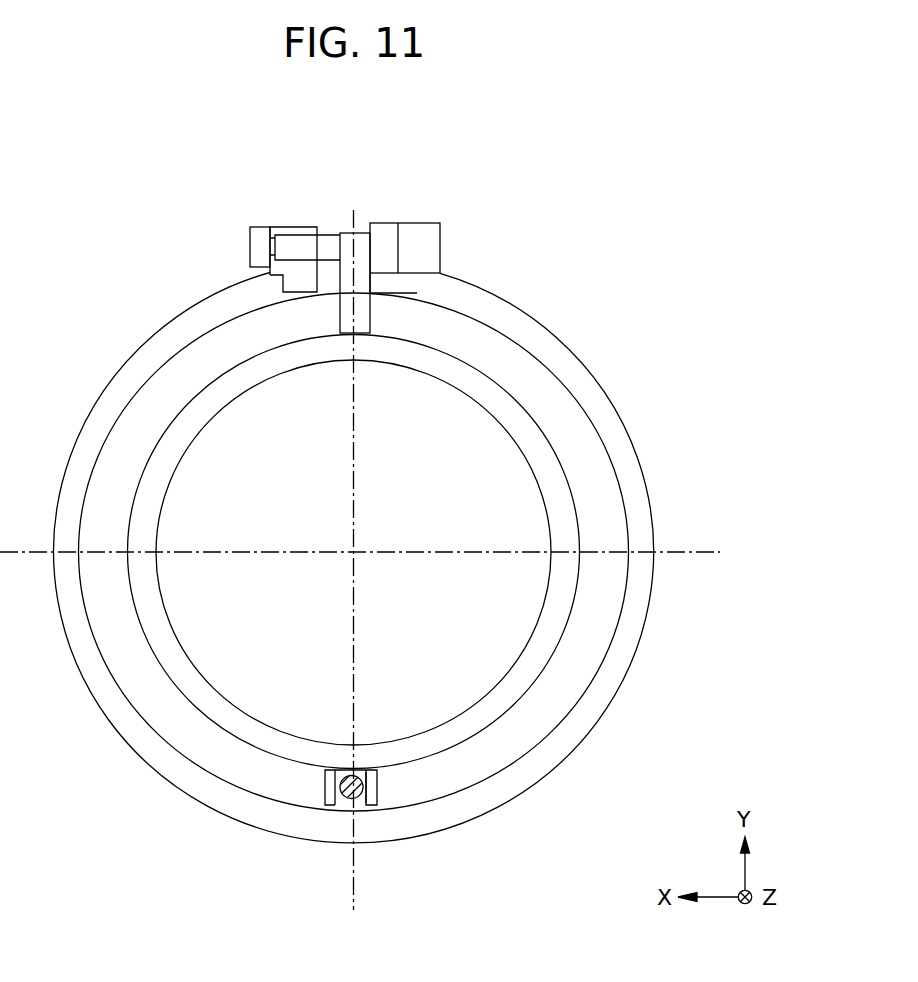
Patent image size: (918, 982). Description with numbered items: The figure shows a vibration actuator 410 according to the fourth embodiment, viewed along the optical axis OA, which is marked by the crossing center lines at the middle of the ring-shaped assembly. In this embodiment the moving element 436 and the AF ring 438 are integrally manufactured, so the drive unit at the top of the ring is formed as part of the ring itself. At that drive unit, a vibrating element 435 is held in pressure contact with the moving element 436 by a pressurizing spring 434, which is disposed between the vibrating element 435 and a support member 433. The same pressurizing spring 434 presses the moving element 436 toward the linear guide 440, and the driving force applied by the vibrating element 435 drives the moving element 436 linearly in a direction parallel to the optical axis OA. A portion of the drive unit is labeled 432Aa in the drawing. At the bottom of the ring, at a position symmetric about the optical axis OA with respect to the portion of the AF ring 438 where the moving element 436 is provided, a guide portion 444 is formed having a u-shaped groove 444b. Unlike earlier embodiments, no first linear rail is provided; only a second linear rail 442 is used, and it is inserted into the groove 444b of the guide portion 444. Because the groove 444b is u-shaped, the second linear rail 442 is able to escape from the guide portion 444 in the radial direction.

The vibration actuator 410 is at (452, 231).
The holding member portion 432Aa is at (427, 229).
The support member 433 is at (277, 221).
The pressurizing spring 434 is at (268, 248).
The vibrating element 435 is at (320, 243).
The moving element 436 is at (360, 252).
The AF ring 438 is at (523, 425).
The linear guide 440 is at (385, 257).
The second linear rail 442 is at (343, 805).
The guide portion 444 is at (373, 781).
The groove 444b is at (356, 800).
The optical axis OA is at (354, 554).